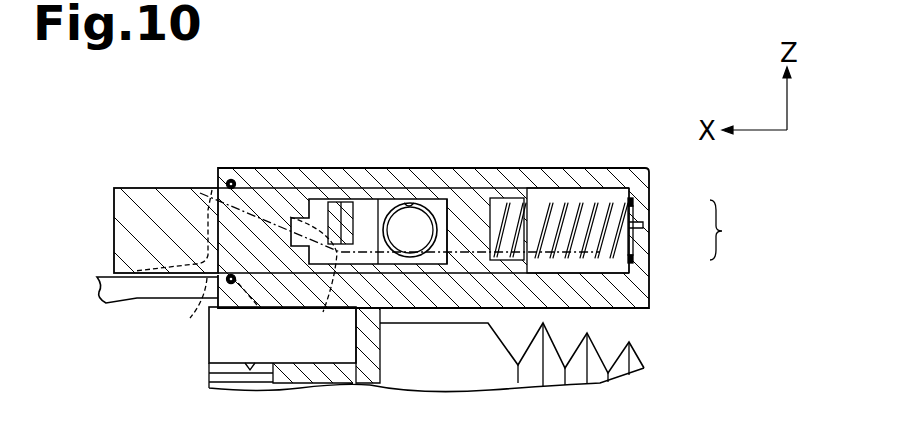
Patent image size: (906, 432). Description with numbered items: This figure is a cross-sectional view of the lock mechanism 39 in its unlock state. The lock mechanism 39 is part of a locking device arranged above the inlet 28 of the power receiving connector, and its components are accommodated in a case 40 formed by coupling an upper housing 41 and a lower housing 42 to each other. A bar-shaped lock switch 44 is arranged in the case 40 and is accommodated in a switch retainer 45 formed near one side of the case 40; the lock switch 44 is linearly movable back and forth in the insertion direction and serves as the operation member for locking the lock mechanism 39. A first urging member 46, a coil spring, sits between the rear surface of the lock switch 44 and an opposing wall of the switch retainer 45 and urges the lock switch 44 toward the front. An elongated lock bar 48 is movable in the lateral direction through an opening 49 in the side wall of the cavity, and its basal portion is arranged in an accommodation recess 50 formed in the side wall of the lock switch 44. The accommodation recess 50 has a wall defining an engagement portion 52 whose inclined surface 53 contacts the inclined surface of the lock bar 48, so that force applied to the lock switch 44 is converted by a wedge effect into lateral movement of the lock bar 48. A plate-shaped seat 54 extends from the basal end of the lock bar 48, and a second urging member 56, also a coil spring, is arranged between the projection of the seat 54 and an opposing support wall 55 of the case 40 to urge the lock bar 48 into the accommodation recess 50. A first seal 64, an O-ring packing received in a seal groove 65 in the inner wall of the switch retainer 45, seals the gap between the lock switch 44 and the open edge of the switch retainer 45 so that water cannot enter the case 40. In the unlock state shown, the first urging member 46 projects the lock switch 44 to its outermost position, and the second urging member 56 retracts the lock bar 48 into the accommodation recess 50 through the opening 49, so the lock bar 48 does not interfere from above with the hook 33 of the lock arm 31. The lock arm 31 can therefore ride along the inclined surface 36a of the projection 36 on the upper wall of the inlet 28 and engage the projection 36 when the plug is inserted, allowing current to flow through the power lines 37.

The inlet 28 is at (213, 347).
The lock arm 31 is at (122, 306).
The hook 33 is at (208, 190).
The projection 36 is at (325, 312).
The inclined surface 36a is at (207, 310).
The power lines 37 is at (632, 342).
The lock mechanism 39 is at (630, 168).
The case 40 is at (735, 230).
The upper housing 41 is at (643, 200).
The lower housing 42 is at (643, 248).
The lock switch 44 is at (130, 187).
The switch retainer 45 is at (306, 186).
The first urging member 46 is at (592, 188).
The lock bar 48 is at (378, 199).
The opening 49 is at (352, 202).
The accommodation recess 50 is at (409, 203).
The engagement portion 52 is at (325, 200).
The inclined surface 53 is at (262, 170).
The seat 54 is at (465, 195).
The support wall 55 is at (488, 196).
The second urging member 56 is at (437, 198).
The first seal 64 is at (248, 310).
The seal groove 65 is at (236, 180).